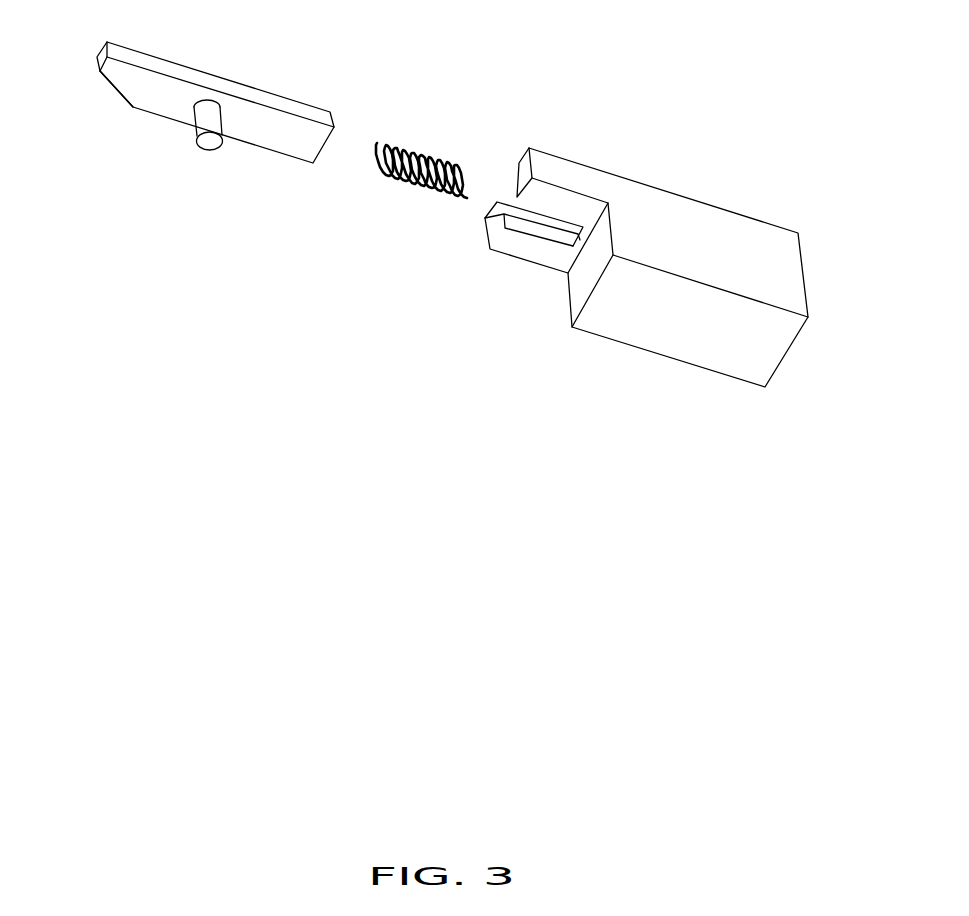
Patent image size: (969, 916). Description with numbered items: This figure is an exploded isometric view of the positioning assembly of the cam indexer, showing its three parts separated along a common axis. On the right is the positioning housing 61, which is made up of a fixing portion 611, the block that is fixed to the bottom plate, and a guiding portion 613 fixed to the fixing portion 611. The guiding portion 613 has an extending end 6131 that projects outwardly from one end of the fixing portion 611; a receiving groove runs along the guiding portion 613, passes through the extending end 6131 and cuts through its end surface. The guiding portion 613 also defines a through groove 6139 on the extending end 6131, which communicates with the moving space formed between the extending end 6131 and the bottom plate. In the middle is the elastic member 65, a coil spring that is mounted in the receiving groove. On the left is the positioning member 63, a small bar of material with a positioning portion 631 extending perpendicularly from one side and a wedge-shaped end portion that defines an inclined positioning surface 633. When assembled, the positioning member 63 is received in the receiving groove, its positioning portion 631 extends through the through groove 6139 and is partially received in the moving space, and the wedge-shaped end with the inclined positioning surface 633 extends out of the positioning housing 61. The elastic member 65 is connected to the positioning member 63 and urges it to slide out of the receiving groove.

The positioning housing 61 is at (639, 221).
The fixing portion 611 is at (700, 245).
The guiding portion 613 is at (567, 225).
The extending end 6131 is at (527, 168).
The through groove 6139 is at (557, 224).
The positioning member 63 is at (206, 150).
The positioning portion 631 is at (208, 138).
The inclined positioning surface 633 is at (113, 90).
The elastic member 65 is at (410, 182).